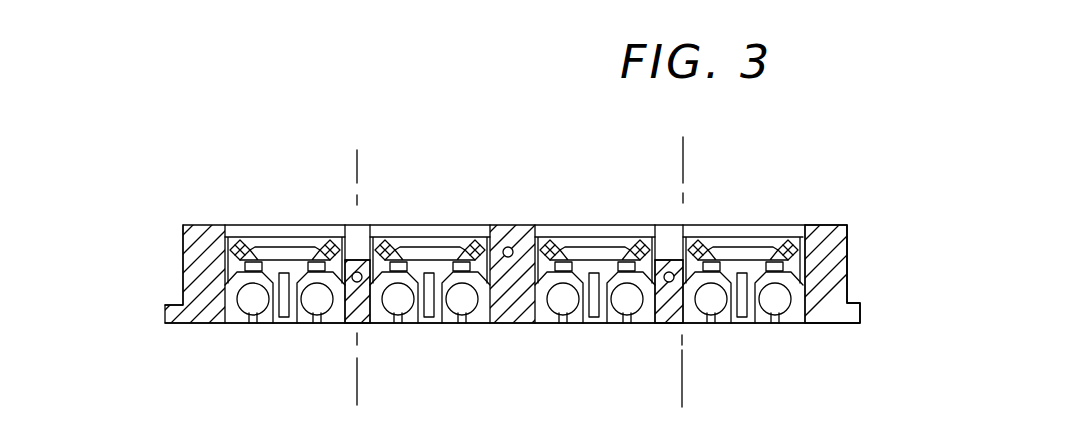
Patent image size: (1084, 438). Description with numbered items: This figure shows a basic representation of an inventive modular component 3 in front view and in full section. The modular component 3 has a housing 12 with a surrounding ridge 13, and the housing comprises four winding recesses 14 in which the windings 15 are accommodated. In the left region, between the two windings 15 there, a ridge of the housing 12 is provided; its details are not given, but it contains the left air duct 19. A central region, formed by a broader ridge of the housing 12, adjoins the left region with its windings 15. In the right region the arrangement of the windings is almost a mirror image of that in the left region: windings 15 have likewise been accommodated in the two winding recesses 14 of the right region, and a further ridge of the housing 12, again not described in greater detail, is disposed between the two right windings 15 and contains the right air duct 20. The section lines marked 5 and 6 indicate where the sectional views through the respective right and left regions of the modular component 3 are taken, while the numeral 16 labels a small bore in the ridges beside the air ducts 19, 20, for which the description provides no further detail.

The modular component 3 is at (858, 272).
The section line 5- 5 is at (681, 163).
The section line 6- 6 is at (355, 165).
The housing 12 is at (827, 232).
The surrounding ridge 13 is at (166, 323).
The winding recesses 14 is at (343, 323).
The windings 15 is at (265, 283).
The pin bore 16 is at (348, 292).
The left air duct 19 is at (352, 258).
The right air duct 20 is at (678, 268).